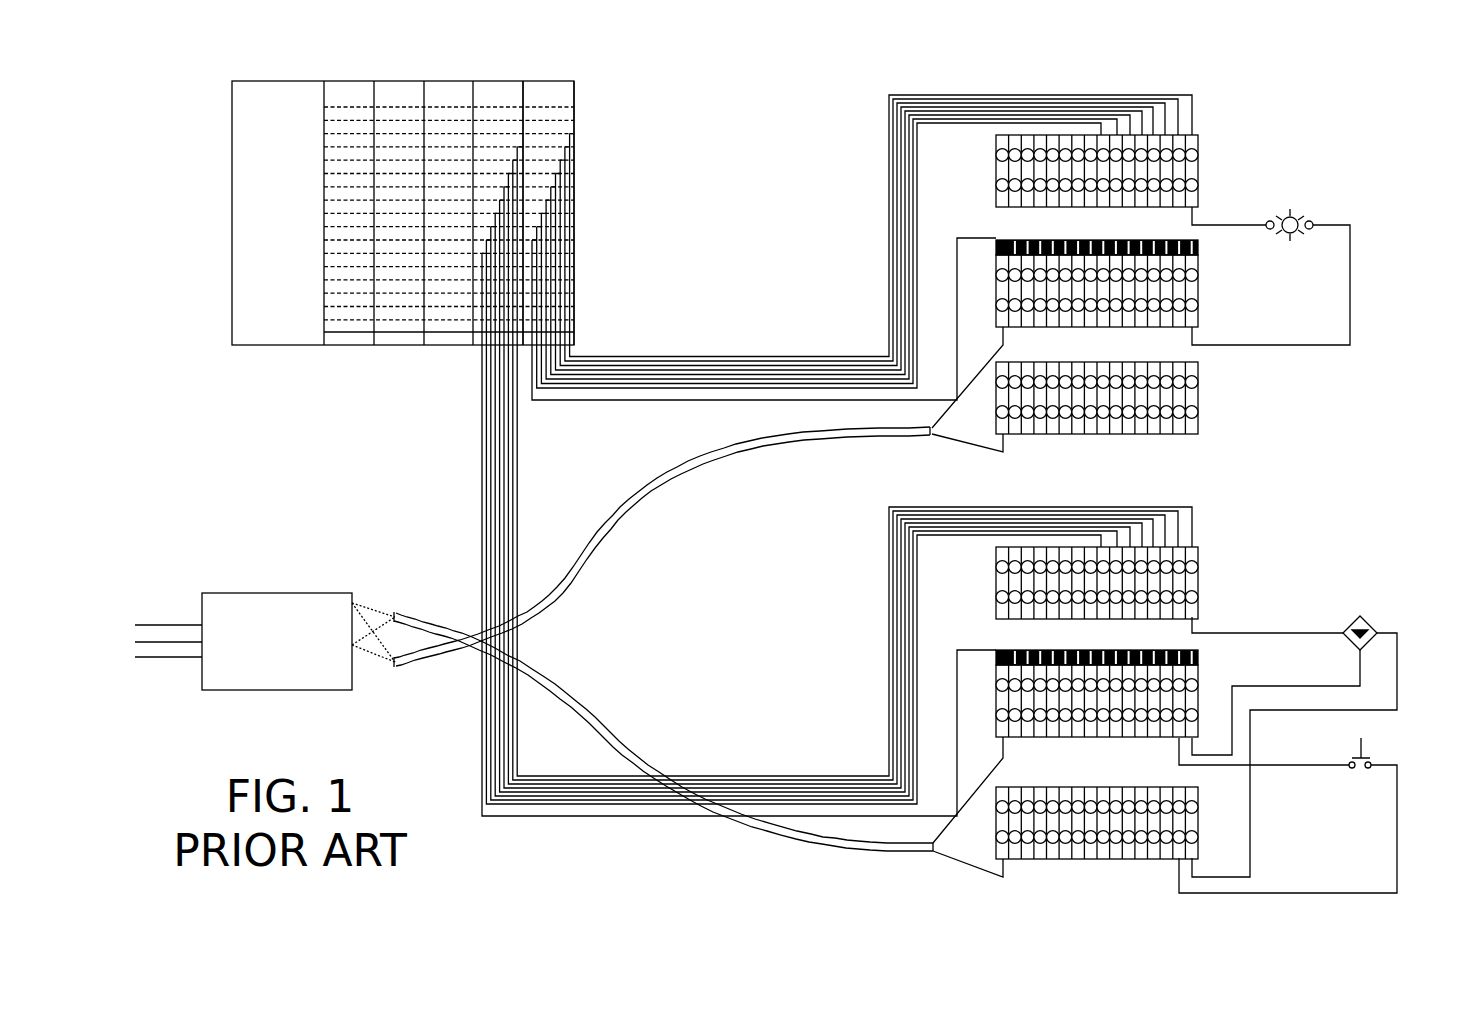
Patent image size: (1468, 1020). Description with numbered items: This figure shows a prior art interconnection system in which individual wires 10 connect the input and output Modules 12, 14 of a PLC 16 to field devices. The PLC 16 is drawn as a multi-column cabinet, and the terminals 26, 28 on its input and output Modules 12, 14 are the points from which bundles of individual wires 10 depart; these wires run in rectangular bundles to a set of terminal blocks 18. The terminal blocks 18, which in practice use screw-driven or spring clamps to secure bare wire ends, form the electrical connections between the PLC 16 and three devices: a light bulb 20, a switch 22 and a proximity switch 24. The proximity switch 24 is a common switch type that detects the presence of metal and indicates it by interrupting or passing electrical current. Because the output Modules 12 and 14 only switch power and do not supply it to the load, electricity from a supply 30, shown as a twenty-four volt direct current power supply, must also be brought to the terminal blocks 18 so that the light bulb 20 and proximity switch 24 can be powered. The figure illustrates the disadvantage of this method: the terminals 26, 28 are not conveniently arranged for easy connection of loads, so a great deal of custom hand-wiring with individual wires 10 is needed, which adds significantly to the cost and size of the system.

The individual wires 10 is at (1012, 82).
The output module 12 is at (549, 96).
The input module 14 is at (503, 96).
The PLC 16 is at (283, 72).
The terminal blocks 18 is at (1222, 173).
The light bulb 20 is at (1305, 205).
The switch 22 is at (1393, 750).
The proximity switch 24 is at (1372, 626).
The terminals 26 is at (497, 146).
The terminals 28 is at (536, 146).
The supply 30 is at (275, 593).